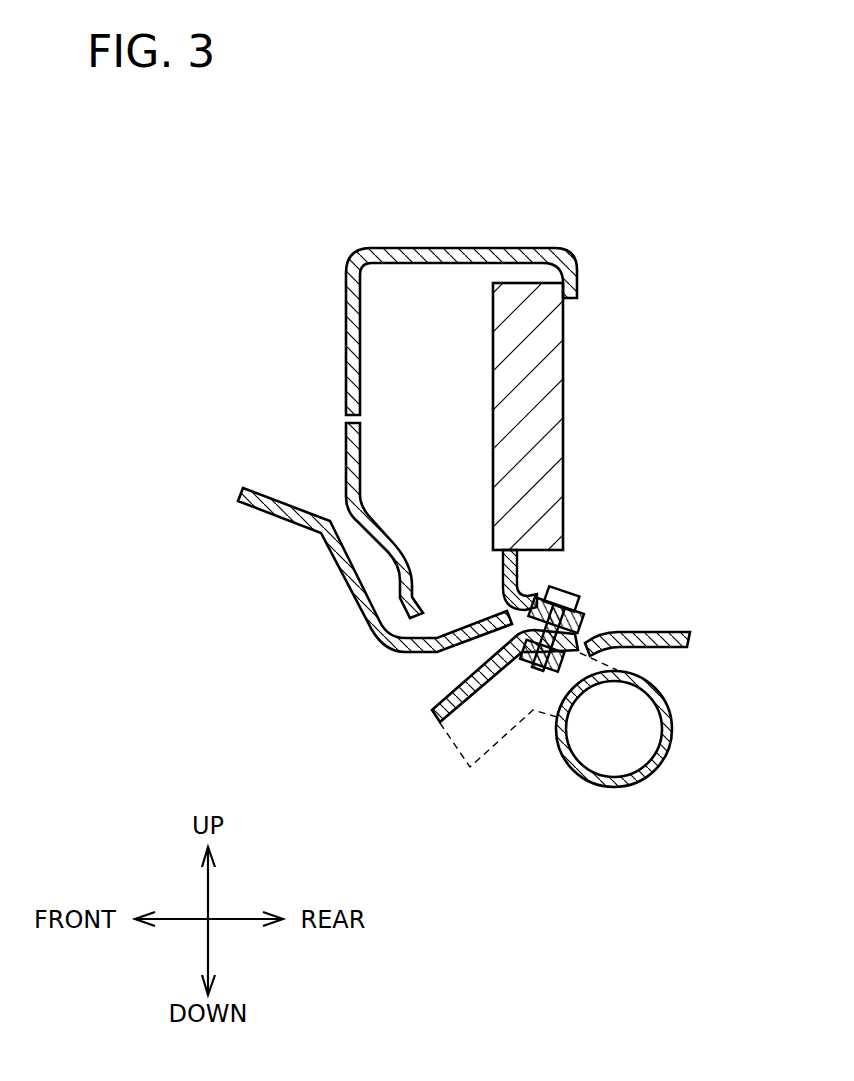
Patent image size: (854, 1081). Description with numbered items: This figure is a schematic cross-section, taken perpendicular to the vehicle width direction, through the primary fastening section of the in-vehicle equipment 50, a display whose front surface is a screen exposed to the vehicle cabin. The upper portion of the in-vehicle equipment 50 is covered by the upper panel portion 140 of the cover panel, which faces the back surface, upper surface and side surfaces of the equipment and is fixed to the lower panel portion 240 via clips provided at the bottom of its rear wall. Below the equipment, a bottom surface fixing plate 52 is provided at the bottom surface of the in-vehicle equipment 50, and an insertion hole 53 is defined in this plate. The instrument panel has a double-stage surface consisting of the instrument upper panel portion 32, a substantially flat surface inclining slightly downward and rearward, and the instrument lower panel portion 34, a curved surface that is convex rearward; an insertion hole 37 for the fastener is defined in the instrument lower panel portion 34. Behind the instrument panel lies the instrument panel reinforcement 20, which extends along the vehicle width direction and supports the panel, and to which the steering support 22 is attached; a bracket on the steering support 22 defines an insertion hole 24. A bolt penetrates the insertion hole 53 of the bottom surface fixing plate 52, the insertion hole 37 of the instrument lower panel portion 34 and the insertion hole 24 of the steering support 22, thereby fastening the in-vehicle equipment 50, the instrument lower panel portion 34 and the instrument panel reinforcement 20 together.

The upper panel portion 140 is at (353, 275).
The lower panel portion 240 is at (353, 440).
The in-vehicle equipment 50 is at (550, 413).
The bottom surface fixing plate 52 is at (517, 573).
The insertion hole 53 is at (570, 597).
The insertion hole 37 is at (582, 601).
The instrument upper panel portion 32 is at (265, 507).
The instrument lower panel portion 34 is at (680, 637).
The steering support 22 is at (463, 688).
The insertion hole 24 is at (535, 655).
The instrument panel reinforcement 20 is at (667, 732).